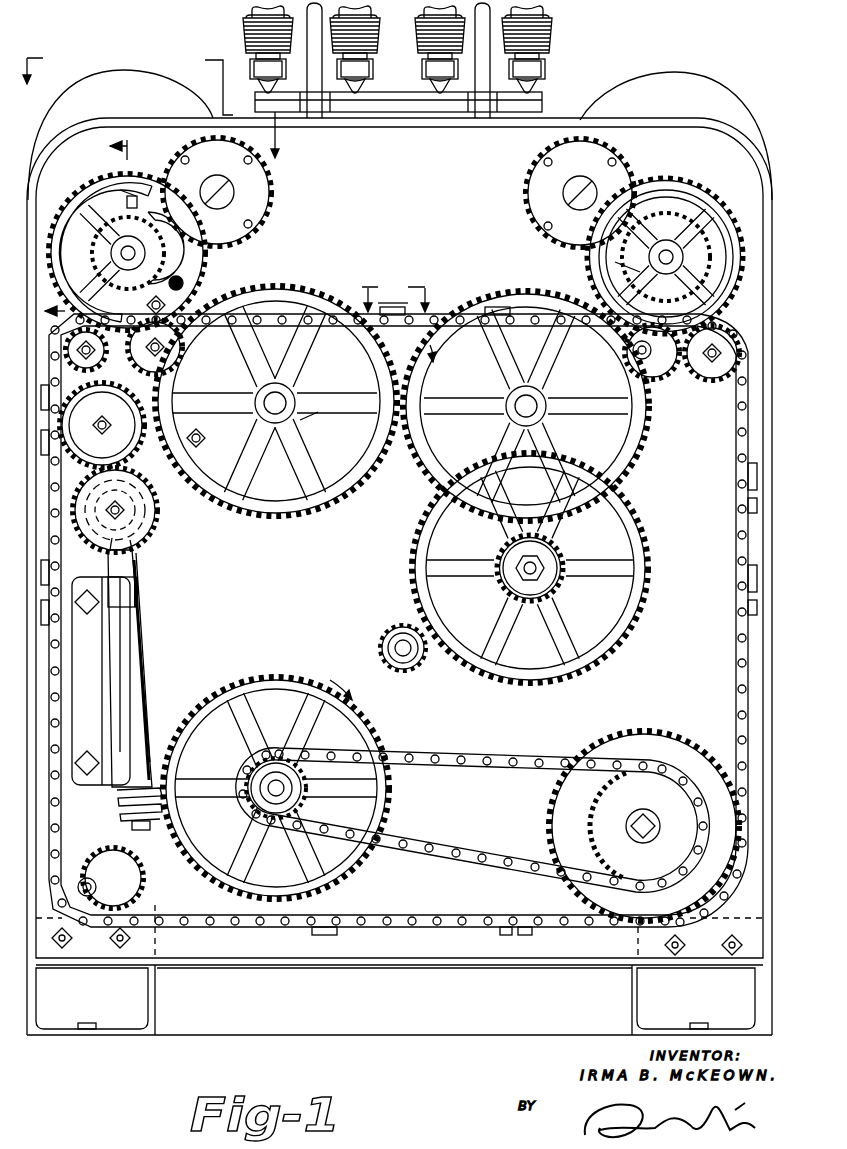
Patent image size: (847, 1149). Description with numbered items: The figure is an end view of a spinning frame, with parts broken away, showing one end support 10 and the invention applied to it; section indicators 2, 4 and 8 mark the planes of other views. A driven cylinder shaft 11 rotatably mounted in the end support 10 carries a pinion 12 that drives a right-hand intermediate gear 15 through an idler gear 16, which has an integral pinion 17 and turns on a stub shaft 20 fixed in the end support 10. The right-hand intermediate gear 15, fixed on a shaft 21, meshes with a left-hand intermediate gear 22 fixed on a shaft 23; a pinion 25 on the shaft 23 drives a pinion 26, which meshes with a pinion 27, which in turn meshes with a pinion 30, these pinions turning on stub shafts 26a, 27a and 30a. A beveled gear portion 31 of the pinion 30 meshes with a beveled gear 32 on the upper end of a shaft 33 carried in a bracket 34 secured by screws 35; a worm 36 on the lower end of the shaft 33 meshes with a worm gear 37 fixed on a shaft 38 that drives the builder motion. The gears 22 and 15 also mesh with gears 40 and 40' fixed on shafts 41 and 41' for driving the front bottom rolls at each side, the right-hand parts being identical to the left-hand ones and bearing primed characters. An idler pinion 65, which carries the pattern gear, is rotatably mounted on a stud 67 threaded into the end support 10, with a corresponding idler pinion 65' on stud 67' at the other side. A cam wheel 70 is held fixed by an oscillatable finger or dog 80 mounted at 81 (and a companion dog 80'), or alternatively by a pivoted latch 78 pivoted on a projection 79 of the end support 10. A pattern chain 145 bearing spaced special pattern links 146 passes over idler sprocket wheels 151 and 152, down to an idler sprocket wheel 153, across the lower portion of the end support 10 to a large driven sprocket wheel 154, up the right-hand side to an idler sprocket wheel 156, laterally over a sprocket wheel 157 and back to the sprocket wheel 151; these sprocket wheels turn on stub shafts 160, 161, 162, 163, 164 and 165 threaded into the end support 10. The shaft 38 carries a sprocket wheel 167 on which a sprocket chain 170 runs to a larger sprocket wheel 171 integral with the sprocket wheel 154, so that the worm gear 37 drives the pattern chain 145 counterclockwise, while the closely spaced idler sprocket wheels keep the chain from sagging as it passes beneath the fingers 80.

The section line 2- 2 is at (159, 112).
The section line 4- 4 is at (82, 225).
The section line 8- 8 is at (396, 283).
The end support 10 is at (530, 142).
The driven cylinder shaft 11 is at (408, 665).
The pinion 12 is at (380, 643).
The right-hand intermediate gear 15 is at (423, 457).
The idler gear 16 is at (436, 614).
The pinion 17 is at (550, 556).
The stub shaft 20 is at (538, 572).
The shaft 21 is at (537, 402).
The left-hand intermediate gear 22 is at (318, 528).
The shaft 23 is at (290, 397).
The pinion 25 is at (306, 421).
The pinion 26 is at (232, 440).
The stub shaft 26a is at (198, 446).
The pinion 27 is at (102, 425).
The stub shaft 27a is at (103, 418).
The pinion 30 is at (145, 538).
The stub shaft 30a is at (135, 514).
The beveled gear portion 31 is at (140, 511).
The beveled gear 32 is at (94, 545).
The shaft 33 is at (142, 688).
The bracket 34 is at (140, 600).
The screws 35 is at (88, 614).
The worm 36 is at (118, 814).
The worm gear 37 is at (270, 676).
The shaft 38 is at (252, 803).
The gear 40 is at (119, 248).
The gear 40' is at (665, 243).
The shaft 41 is at (108, 253).
The shaft 41' is at (666, 240).
The idler pinion 65 is at (235, 192).
The idler pinion 65' is at (558, 193).
The stud 67 is at (217, 178).
The stud 67' is at (580, 178).
The cam wheel 70 is at (166, 248).
The pivoted latch 78 is at (137, 203).
The projection 79 is at (124, 199).
The finger or dog 80 is at (183, 286).
The finger or dog 80' is at (592, 267).
The pivot mounting 81 is at (184, 285).
The pattern chain 145 is at (730, 606).
The special pattern links 146 is at (740, 474).
The idler sprocket wheel 151 is at (185, 362).
The idler sprocket wheel 152 is at (112, 353).
The idler sprocket wheel 153 is at (118, 862).
The large driven sprocket wheel 154 is at (650, 731).
The idler sprocket wheel 156 is at (712, 390).
The sprocket wheel 157 is at (665, 380).
The stub shaft 160 is at (170, 349).
The stub shaft 161 is at (123, 375).
The stub shaft 162 is at (98, 887).
The stub shaft 163 is at (650, 806).
The stub shaft 164 is at (713, 362).
The stub shaft 165 is at (632, 350).
The sprocket wheel 167 is at (308, 788).
The sprocket chain 170 is at (426, 757).
The larger sprocket wheel 171 is at (592, 822).